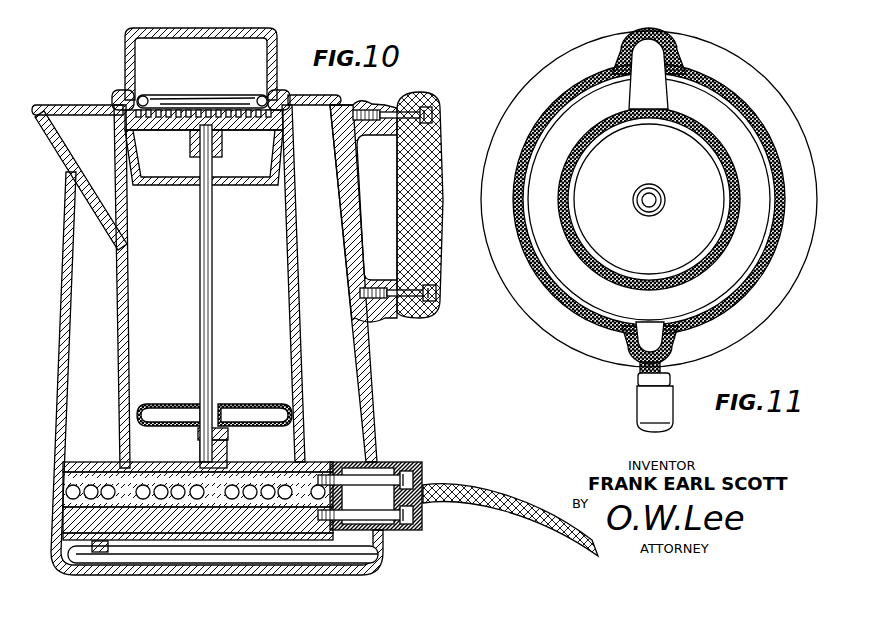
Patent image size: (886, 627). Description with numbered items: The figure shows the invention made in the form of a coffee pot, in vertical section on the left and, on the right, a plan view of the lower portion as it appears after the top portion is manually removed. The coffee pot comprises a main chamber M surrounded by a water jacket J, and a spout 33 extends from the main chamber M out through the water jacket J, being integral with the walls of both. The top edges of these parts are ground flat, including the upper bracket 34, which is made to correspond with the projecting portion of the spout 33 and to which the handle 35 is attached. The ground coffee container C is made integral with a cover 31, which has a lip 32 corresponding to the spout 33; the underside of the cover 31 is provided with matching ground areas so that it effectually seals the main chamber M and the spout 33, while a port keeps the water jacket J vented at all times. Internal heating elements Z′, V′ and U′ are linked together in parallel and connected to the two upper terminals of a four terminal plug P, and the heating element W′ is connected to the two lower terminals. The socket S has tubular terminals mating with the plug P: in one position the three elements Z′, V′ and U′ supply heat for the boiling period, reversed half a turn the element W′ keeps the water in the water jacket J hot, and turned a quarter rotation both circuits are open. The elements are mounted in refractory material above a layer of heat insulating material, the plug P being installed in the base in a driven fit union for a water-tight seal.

In FIG. 10, the cover 31 is at (328, 98).
In FIG. 10, the lip 32 is at (67, 104).
In FIG. 10, the spout 33 is at (54, 155).
In FIG. 11, the spout 33 is at (647, 43).
In FIG. 10, the upper bracket 34 is at (355, 104).
In FIG. 11, the upper bracket 34 is at (627, 350).
In FIG. 10, the handle 35 is at (397, 214).
In FIG. 11, the handle 35 is at (637, 412).
In FIG. 10, the ground coffee container C is at (201, 64).
In FIG. 10, the main chamber M is at (232, 346).
In FIG. 11, the main chamber M is at (649, 199).
In FIG. 10, the water jacket J is at (68, 328).
In FIG. 11, the water jacket J is at (649, 199).
In FIG. 10, the four terminal plug P is at (328, 464).
In FIG. 10, the socket S is at (407, 463).
In FIG. 10, the heating element U′ is at (90, 485).
In FIG. 10, the heating element V′ is at (106, 485).
In FIG. 10, the heating element W′ is at (73, 485).
In FIG. 10, the heating element Z′ is at (282, 484).